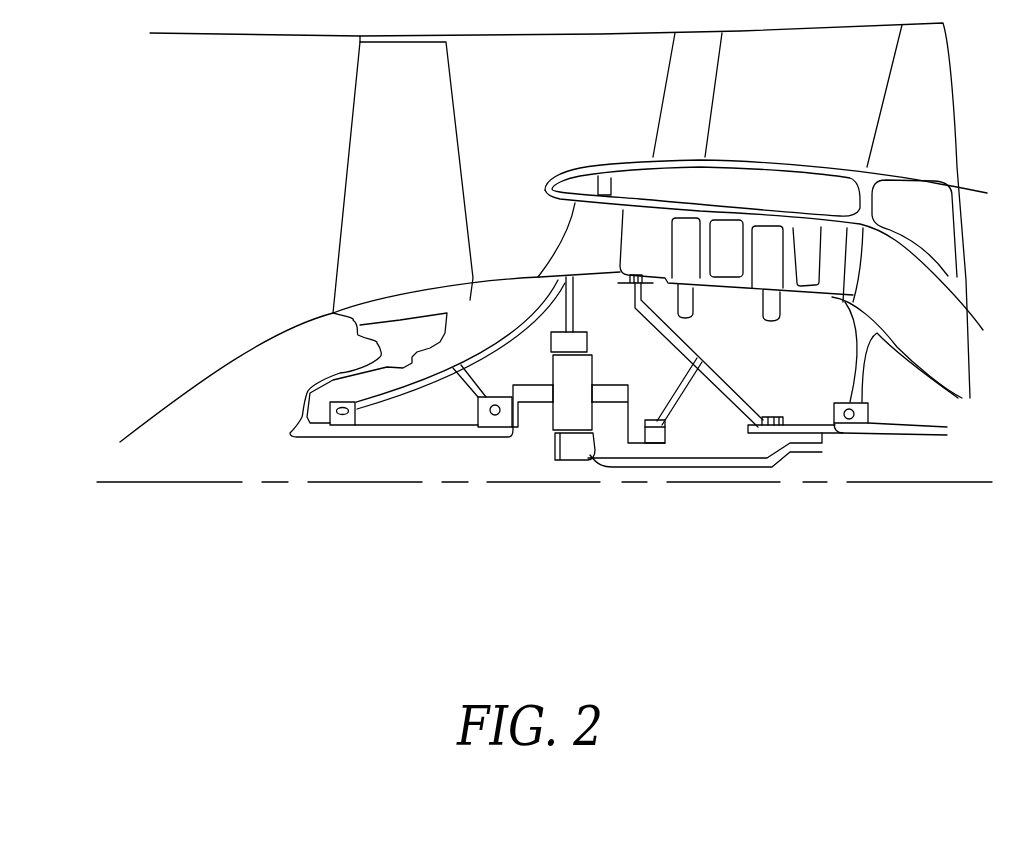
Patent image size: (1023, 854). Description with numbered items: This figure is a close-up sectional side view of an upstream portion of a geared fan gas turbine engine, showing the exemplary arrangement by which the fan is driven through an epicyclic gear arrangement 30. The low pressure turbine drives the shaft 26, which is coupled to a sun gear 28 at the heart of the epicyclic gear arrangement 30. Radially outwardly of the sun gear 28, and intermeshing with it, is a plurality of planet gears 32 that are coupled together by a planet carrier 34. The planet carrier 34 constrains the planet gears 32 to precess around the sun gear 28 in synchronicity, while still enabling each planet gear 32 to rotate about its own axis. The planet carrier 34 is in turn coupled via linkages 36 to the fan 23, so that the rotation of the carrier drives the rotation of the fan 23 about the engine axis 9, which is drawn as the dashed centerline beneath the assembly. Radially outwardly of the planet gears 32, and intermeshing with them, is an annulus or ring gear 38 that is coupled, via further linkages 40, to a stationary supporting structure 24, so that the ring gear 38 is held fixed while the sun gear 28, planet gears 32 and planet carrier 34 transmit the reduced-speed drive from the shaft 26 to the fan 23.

The engine axis 9 is at (220, 483).
The fan 23 is at (375, 177).
The stationary supporting structure 24 is at (575, 230).
The shaft 26 is at (832, 520).
The sun gear 28 is at (575, 450).
The epicyclic gear arrangement 30 is at (537, 432).
The planet gears 32 is at (558, 418).
The planet carrier 34 is at (626, 420).
The linkages 36 is at (528, 427).
The ring gear 38 is at (577, 342).
The linkages 40 is at (573, 310).